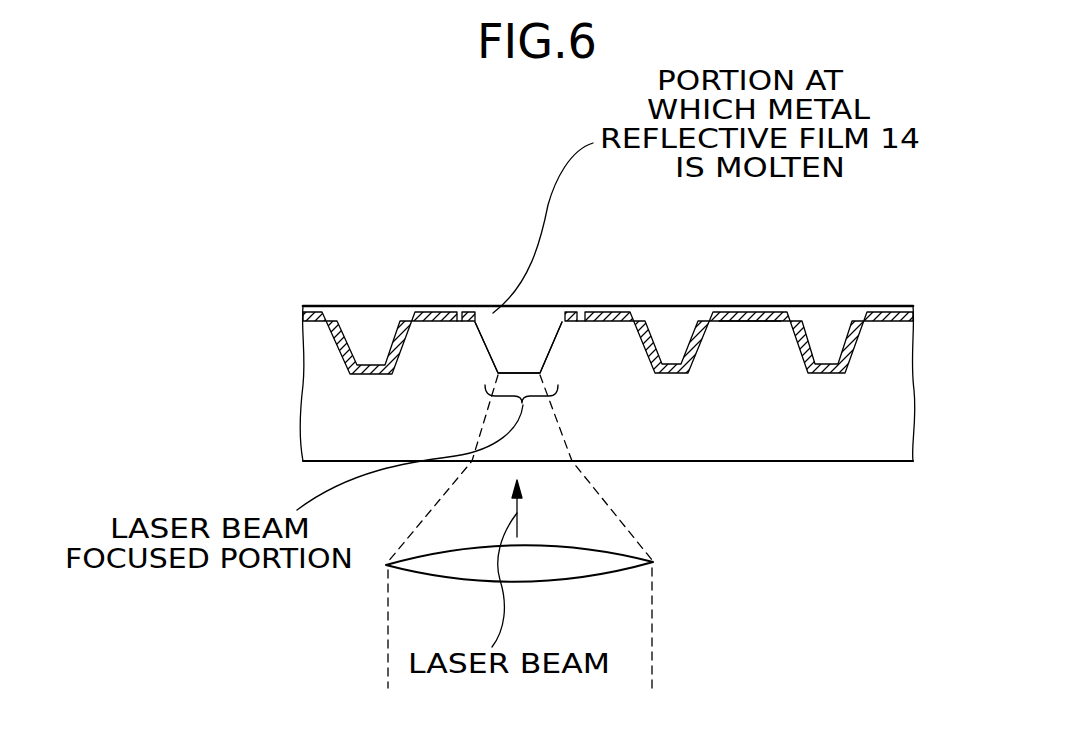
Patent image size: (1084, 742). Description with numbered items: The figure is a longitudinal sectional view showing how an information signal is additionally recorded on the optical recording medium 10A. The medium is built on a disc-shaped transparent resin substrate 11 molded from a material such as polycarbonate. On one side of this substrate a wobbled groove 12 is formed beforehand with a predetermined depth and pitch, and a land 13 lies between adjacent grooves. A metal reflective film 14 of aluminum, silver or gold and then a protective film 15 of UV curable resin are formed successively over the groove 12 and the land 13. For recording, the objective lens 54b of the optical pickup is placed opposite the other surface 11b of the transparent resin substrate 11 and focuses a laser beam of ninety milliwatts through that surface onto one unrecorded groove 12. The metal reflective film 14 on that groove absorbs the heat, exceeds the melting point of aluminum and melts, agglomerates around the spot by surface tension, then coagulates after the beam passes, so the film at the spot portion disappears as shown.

The optical recording medium 10A is at (551, 415).
The transparent resin substrate 11 is at (607, 415).
The other surface of the transparent resin substrate 11b is at (758, 461).
The wobbled groove 12 is at (520, 372).
The land 13 is at (752, 324).
The metal reflective film 14 is at (752, 318).
The protective film 15 is at (541, 322).
The objective lens 54b is at (613, 567).